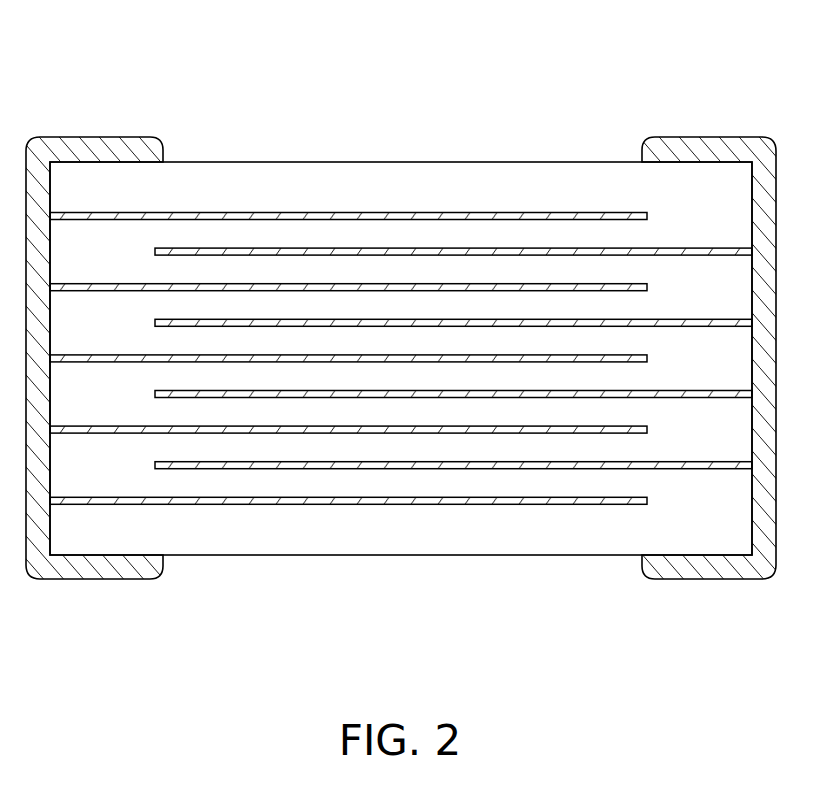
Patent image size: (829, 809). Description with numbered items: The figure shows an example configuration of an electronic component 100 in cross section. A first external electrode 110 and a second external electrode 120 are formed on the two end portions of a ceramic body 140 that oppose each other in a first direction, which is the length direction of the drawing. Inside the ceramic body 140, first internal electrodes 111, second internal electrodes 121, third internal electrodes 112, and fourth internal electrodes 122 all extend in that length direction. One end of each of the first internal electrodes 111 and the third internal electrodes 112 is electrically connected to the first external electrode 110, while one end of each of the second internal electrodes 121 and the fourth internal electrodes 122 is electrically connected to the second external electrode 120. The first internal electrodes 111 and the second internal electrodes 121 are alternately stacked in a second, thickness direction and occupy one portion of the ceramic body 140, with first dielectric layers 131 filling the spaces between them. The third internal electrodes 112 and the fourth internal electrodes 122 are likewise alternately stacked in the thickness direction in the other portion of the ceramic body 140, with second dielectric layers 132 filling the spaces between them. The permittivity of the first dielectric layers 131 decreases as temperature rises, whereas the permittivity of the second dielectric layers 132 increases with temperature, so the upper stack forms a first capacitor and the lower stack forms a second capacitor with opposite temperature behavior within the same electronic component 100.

The electronic component 100 is at (341, 33).
The first external electrode 110 is at (92, 148).
The second external electrode 120 is at (692, 152).
The ceramic body 140 is at (583, 160).
The first internal electrodes 111 is at (292, 288).
The third internal electrodes 112 is at (292, 428).
The second internal electrodes 121 is at (495, 323).
The fourth internal electrodes 122 is at (493, 393).
The first dielectric layers 131 is at (382, 308).
The second dielectric layers 132 is at (382, 407).